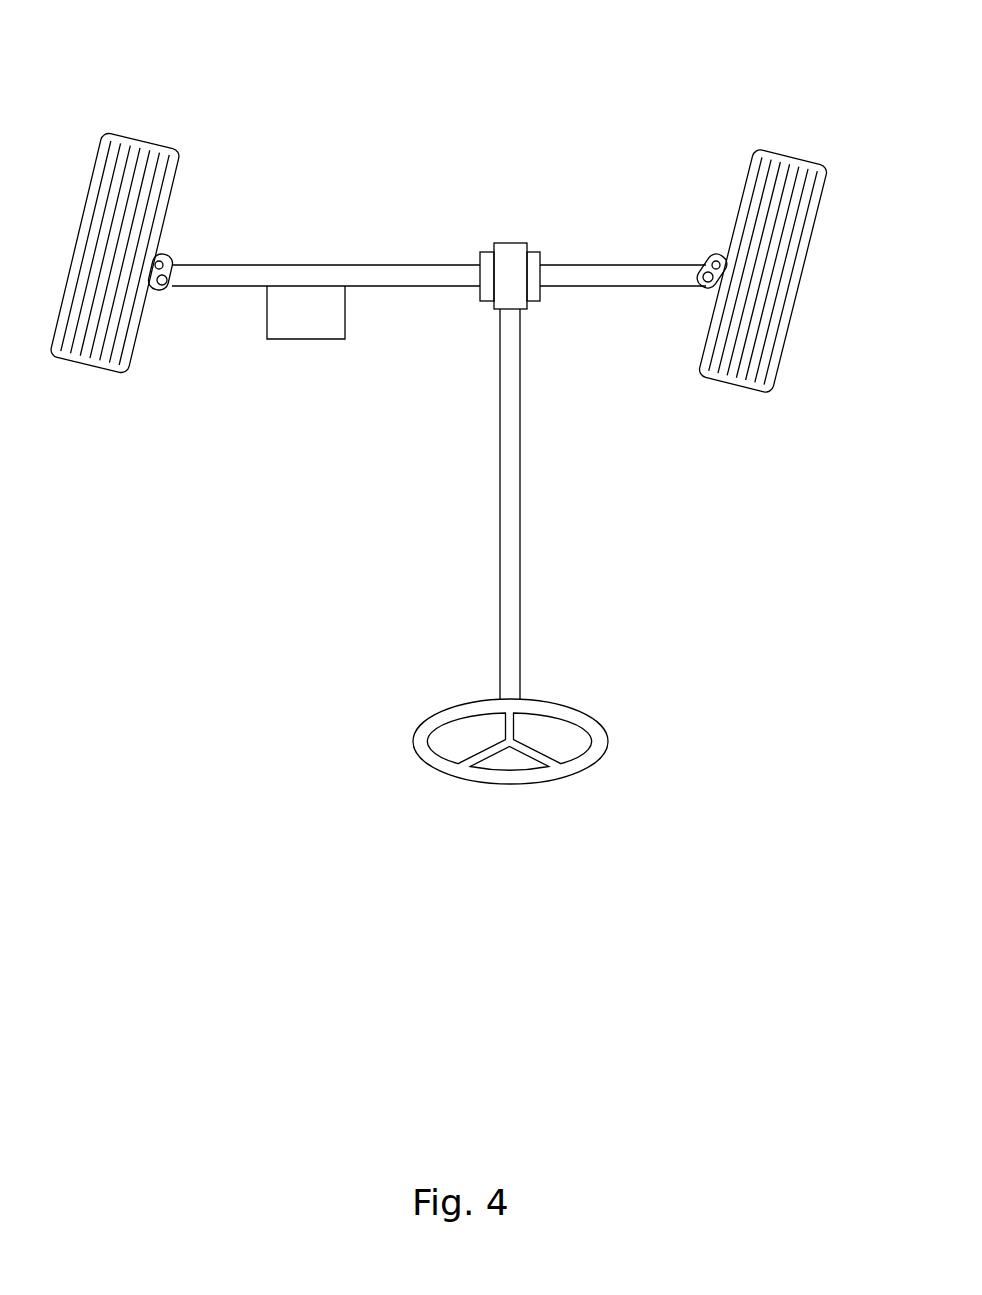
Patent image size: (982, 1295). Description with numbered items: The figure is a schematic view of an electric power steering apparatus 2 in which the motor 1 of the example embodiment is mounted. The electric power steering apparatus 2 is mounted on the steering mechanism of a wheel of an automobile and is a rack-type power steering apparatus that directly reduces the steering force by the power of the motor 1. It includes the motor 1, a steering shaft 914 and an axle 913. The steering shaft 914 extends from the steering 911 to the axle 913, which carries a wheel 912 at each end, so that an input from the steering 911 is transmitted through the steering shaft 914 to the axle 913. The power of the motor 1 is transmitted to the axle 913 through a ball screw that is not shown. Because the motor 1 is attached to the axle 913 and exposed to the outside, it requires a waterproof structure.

The motor 1 is at (305, 343).
The electric power steering apparatus 2 is at (667, 132).
The steering 911 is at (498, 775).
The wheel 912 is at (98, 340).
The axle 913 is at (575, 278).
The steering shaft 914 is at (512, 627).